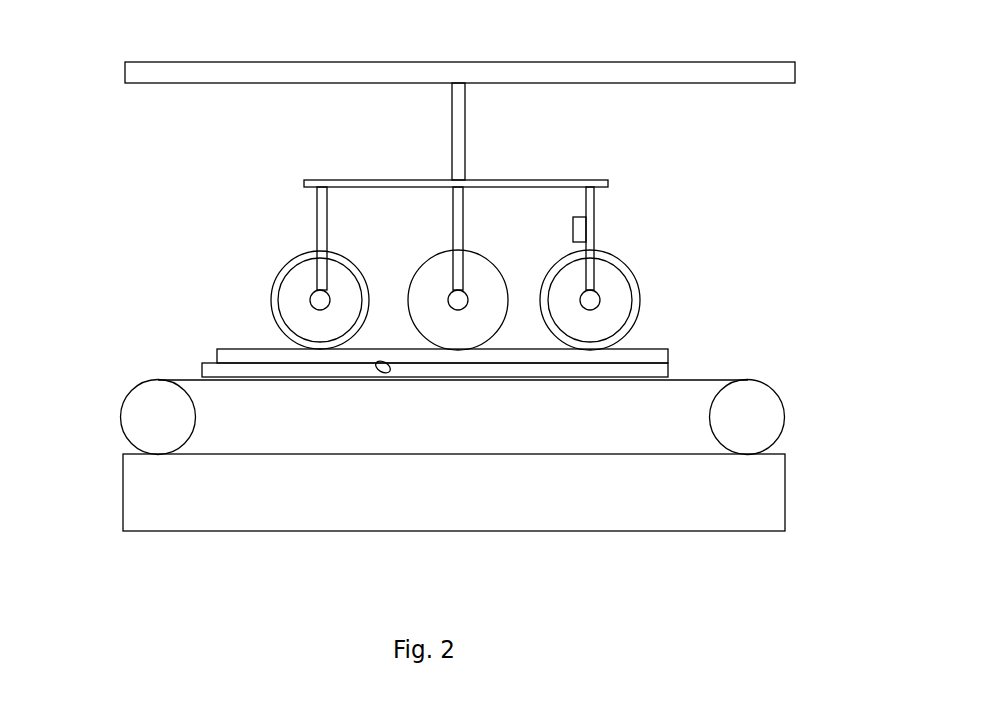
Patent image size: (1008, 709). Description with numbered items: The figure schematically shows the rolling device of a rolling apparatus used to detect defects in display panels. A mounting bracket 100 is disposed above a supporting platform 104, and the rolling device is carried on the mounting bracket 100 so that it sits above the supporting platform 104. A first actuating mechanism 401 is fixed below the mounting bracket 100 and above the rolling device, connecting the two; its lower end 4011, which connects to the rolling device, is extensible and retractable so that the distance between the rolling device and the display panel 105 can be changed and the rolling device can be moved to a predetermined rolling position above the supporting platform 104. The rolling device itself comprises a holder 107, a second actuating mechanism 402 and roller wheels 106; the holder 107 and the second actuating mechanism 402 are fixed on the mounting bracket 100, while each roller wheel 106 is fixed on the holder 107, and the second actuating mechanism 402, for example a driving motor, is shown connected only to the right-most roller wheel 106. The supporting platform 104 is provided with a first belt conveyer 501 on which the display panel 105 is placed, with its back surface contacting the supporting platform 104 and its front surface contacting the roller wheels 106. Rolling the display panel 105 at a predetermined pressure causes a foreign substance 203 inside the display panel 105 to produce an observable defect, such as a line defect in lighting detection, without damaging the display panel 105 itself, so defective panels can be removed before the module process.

The mounting bracket 100 is at (758, 73).
The first actuating mechanism 401 is at (465, 130).
The end of the first actuating mechanism 4011 is at (452, 181).
The holder 107 is at (595, 225).
The second actuating mechanism 402 is at (572, 228).
The roller wheel 106 is at (610, 303).
The display panel 105 is at (225, 377).
The foreign substance 203 is at (383, 373).
The first belt conveyer 501 is at (515, 410).
The supporting platform 104 is at (747, 492).